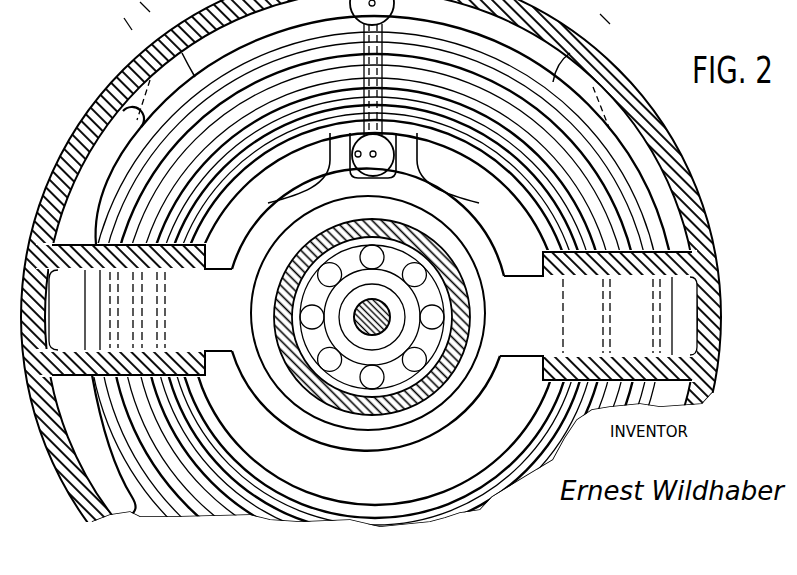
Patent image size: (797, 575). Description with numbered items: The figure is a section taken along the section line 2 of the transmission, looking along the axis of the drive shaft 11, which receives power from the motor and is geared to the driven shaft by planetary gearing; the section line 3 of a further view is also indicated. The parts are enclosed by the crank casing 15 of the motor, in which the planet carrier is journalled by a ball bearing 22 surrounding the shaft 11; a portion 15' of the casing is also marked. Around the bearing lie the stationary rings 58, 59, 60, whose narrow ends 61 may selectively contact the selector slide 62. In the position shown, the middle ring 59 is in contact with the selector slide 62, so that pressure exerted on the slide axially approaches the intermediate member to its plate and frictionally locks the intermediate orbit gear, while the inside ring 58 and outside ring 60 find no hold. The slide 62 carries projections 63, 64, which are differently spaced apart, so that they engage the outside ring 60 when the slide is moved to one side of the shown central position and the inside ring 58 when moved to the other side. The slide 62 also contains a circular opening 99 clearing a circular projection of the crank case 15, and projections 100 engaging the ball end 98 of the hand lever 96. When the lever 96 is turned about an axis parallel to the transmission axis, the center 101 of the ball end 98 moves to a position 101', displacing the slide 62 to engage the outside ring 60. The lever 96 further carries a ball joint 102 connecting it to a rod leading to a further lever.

The section line 2 is at (136, 6).
The section line 3 is at (576, 3).
The drive shaft 11 is at (395, 323).
The crank casing 15 is at (376, 287).
The housing cover 15' is at (100, 15).
The ball bearing 22 is at (412, 273).
The stationary ring 58 is at (163, 238).
The stationary ring 59 is at (147, 217).
The stationary ring 60 is at (121, 185).
The narrow ends 61 is at (207, 247).
The selector slide 62 is at (215, 333).
The projection 63 is at (158, 311).
The projection 64 is at (608, 307).
The hand lever 96 is at (370, 50).
The ball end 98 is at (387, 161).
The circular opening 99 is at (440, 227).
The projections 100 is at (403, 147).
The center 101 is at (387, 176).
The displaced center position 101' is at (324, 161).
The ball joint 102 is at (377, 4).